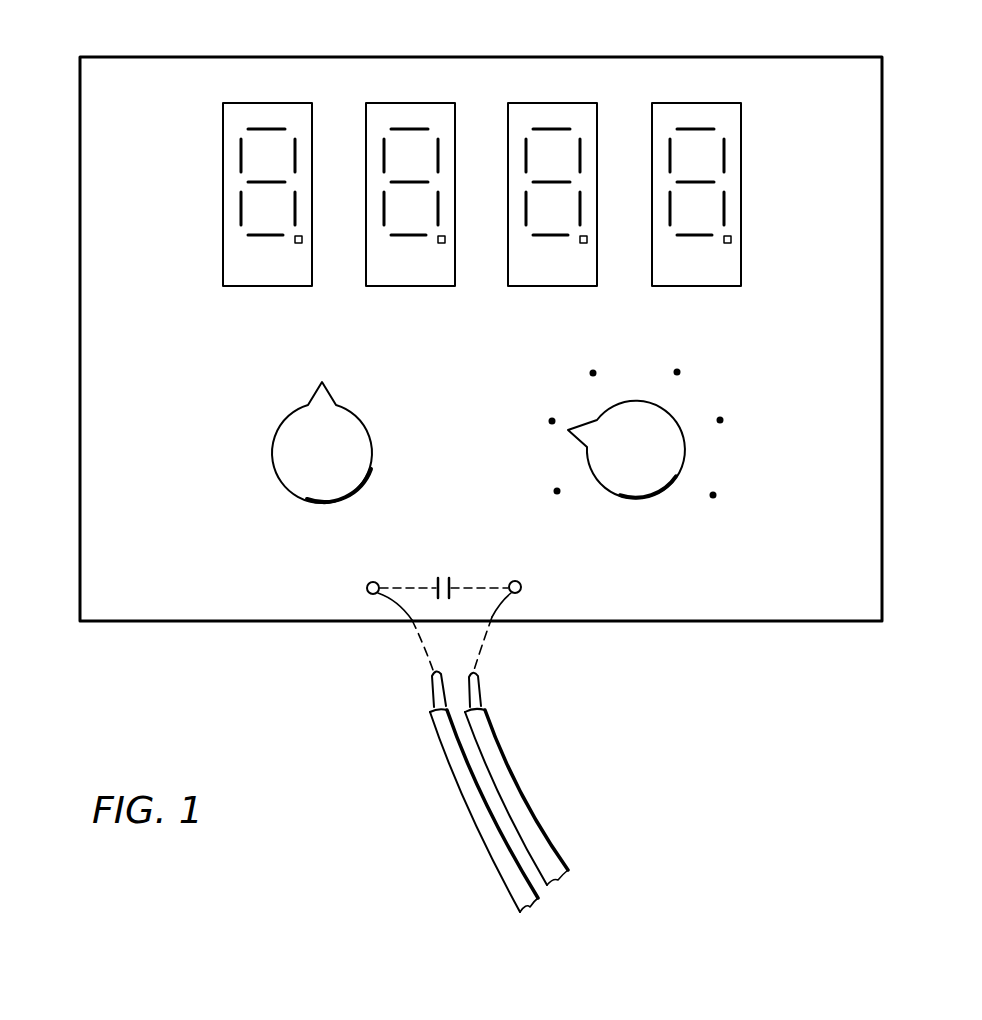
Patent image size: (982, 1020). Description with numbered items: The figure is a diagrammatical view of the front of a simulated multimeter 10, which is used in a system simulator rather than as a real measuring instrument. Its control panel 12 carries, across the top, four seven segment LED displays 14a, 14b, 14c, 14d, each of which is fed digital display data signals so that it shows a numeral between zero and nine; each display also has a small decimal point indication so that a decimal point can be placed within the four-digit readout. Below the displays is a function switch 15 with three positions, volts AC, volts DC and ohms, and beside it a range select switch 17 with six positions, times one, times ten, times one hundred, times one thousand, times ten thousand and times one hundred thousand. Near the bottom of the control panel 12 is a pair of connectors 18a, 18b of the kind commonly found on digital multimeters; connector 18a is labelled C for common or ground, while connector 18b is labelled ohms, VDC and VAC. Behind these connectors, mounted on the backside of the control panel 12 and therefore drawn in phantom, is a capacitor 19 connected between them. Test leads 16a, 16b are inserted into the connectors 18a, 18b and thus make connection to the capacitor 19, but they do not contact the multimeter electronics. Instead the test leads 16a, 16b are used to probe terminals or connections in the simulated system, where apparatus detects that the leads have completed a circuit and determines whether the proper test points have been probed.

The simulated multimeter 10 is at (128, 653).
The control panel 12 is at (870, 190).
The seven segment LED display 14a is at (272, 112).
The seven segment LED display 14b is at (427, 107).
The seven segment LED display 14c is at (557, 108).
The seven segment LED display 14d is at (697, 105).
The function switch 15 is at (290, 480).
The test lead 16a is at (470, 805).
The test lead 16b is at (512, 790).
The range select switch 17 is at (622, 490).
The connector 18a is at (367, 596).
The connector 18b is at (518, 595).
The capacitor 19 is at (447, 599).